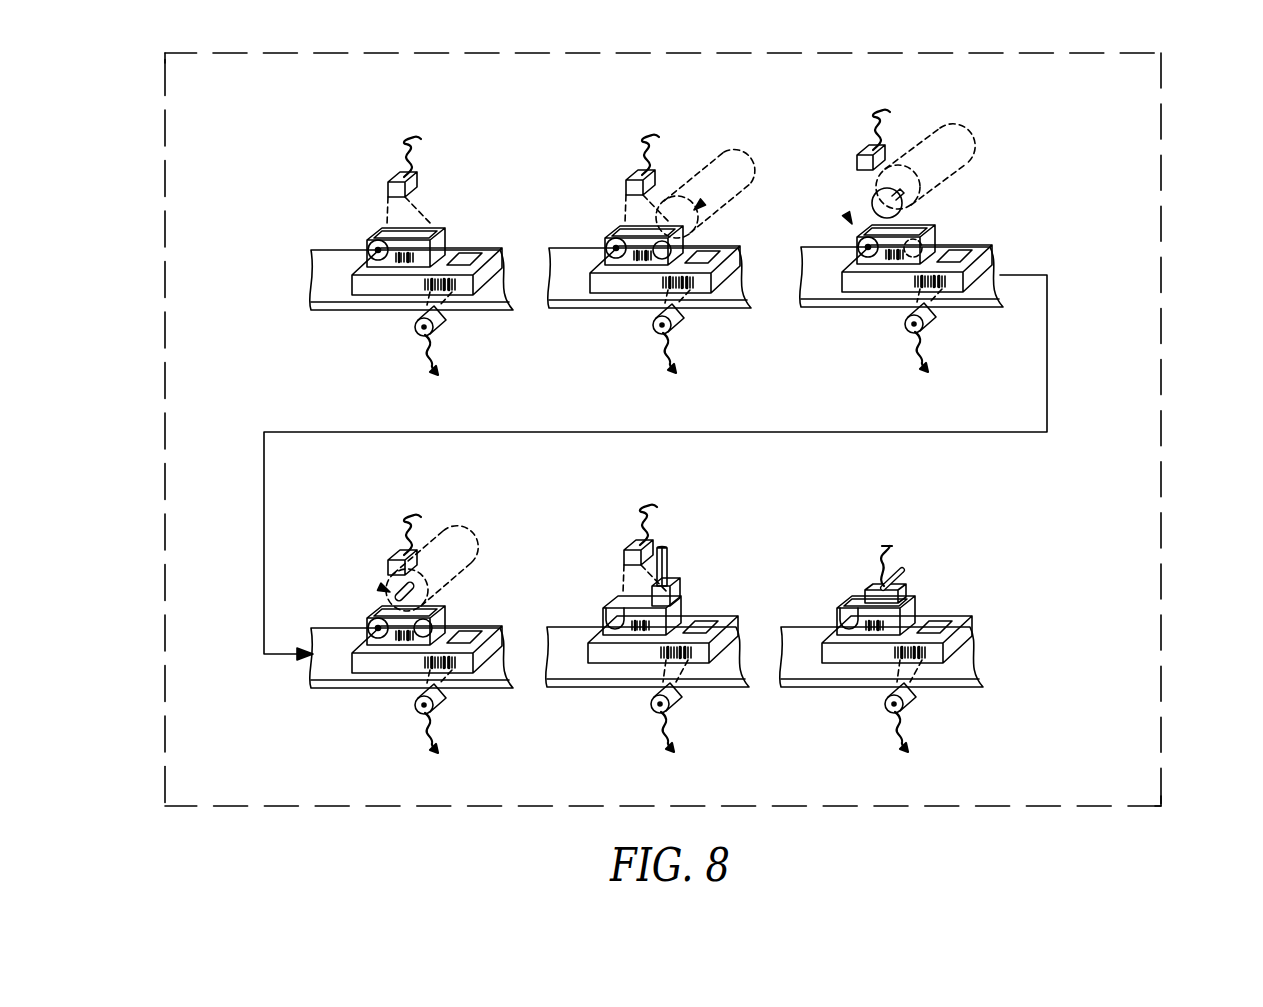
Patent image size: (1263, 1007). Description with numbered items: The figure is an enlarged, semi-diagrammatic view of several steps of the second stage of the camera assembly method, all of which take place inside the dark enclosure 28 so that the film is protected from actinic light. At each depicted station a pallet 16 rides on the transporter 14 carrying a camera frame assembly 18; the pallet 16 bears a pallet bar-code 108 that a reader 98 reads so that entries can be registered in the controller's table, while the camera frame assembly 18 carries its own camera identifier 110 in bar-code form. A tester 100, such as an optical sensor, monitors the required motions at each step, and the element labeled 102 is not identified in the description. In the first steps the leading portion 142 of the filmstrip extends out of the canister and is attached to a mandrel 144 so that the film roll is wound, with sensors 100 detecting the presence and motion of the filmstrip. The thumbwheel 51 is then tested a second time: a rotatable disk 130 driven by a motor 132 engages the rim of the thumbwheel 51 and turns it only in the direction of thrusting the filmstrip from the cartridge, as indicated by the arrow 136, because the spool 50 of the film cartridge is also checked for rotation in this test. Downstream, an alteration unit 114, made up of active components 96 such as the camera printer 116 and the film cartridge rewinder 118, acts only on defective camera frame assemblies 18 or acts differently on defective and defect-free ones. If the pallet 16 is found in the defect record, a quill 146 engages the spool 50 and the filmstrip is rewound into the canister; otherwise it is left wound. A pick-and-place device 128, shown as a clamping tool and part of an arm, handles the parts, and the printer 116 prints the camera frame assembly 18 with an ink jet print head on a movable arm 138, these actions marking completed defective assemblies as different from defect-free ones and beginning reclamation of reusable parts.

The transporter 14 is at (756, 627).
The pallet 16 is at (984, 660).
The camera frame assembly 18 is at (679, 606).
The dark enclosure 28 is at (1160, 476).
The spool 50 is at (353, 253).
The thumbwheel 51 is at (378, 236).
The active component 96 is at (893, 554).
The reader 98 is at (440, 328).
The tester 100 is at (418, 178).
The signal line 102 is at (397, 148).
The pallet bar-code 108 is at (446, 290).
The camera identifier 110 is at (446, 247).
The alteration unit 114 is at (480, 547).
The camera printer 116 is at (973, 549).
The film cartridge rewinder 118 is at (449, 533).
The pick-and-place device 128 is at (669, 565).
The rotatable disk 130 is at (930, 225).
The motor 132 is at (968, 142).
The arrow 136 is at (848, 214).
The movable arm 138 is at (900, 584).
The leading portion 142 is at (430, 231).
The mandrel 144 is at (703, 202).
The quill 146 is at (376, 588).